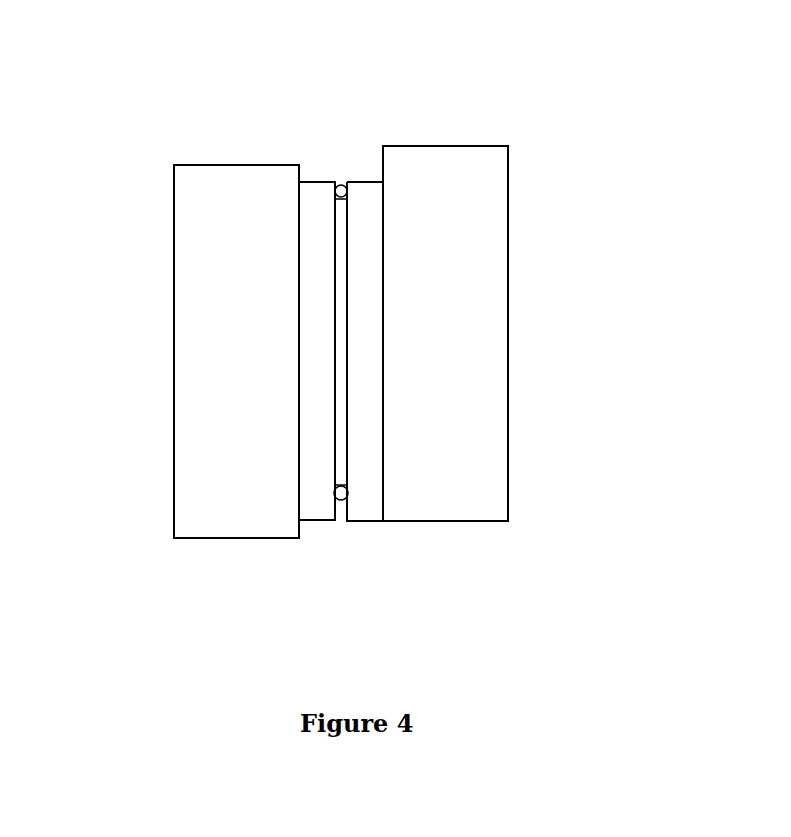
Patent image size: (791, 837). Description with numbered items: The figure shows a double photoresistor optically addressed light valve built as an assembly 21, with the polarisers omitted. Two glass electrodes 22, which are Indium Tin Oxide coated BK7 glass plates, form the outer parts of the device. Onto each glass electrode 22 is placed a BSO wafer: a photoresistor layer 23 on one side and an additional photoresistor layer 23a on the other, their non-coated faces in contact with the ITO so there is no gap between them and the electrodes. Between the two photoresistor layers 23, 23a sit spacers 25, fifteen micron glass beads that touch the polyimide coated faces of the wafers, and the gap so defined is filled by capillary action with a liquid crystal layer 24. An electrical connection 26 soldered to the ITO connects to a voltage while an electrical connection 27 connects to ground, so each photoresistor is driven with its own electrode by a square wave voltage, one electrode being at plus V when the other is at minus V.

The assembly 21 is at (517, 127).
The glass electrodes 22 is at (443, 290).
The photoresistor layer 23 is at (318, 326).
The additional photoresistor layer 23a is at (367, 343).
The liquid crystal layer 24 is at (333, 433).
The spacers 25 is at (345, 500).
The electrical connection 26 is at (299, 165).
The electrical connection 27 is at (383, 146).